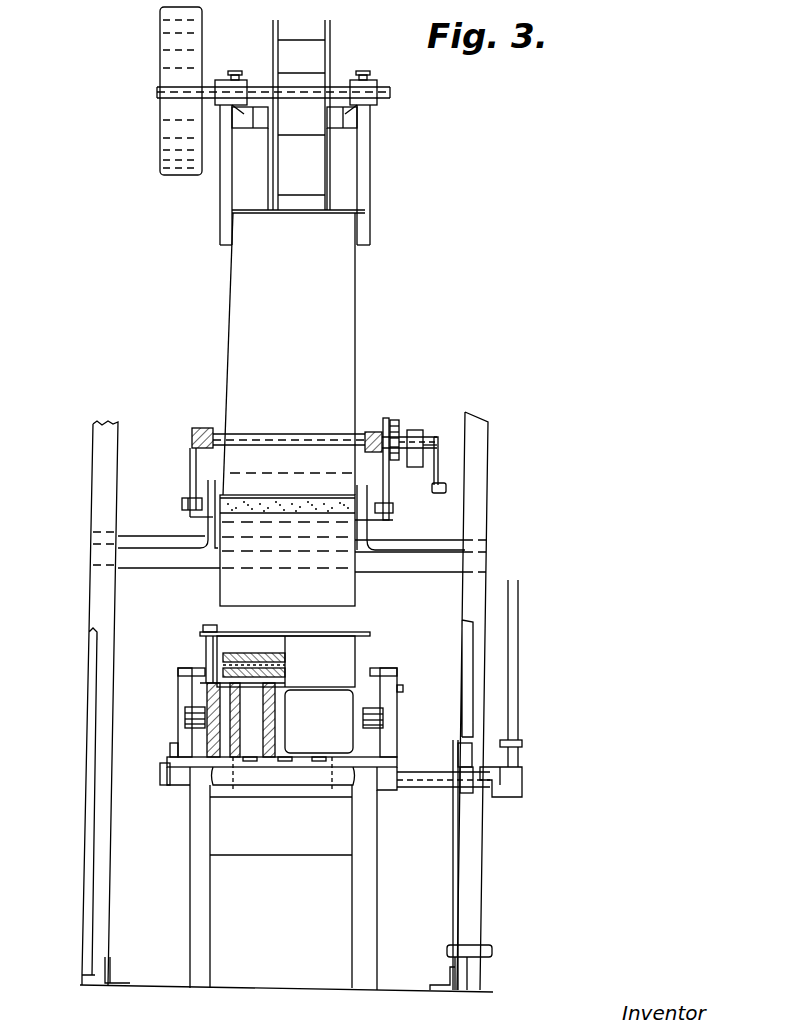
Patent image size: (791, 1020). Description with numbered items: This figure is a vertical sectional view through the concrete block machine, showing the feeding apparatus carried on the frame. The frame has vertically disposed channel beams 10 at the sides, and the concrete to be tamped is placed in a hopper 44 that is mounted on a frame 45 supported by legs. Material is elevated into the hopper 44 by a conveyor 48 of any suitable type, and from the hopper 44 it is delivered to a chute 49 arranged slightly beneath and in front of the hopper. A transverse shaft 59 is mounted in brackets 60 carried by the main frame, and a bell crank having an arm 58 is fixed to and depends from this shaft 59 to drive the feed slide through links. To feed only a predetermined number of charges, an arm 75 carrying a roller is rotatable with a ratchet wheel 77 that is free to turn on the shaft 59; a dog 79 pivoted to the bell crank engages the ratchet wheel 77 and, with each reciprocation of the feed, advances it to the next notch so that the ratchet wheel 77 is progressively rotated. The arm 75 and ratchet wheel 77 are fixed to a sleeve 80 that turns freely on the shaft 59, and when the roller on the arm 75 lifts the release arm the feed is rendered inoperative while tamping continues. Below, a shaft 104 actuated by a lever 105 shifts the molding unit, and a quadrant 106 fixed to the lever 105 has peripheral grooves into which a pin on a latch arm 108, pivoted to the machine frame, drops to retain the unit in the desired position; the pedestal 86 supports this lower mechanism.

The channel beam 10 is at (95, 598).
The hopper 44 is at (333, 347).
The frame 45 is at (437, 548).
The conveyor 48 is at (315, 67).
The chute 49 is at (333, 590).
The arm 58 is at (389, 490).
The transverse shaft 59 is at (280, 436).
The bracket 60 is at (204, 428).
The arm 75 is at (437, 470).
The ratchet wheel 77 is at (391, 458).
The dog 79 is at (415, 430).
The sleeve 80 is at (403, 430).
The pedestal 86 is at (200, 897).
The shaft 104 is at (440, 788).
The lever 105 is at (515, 660).
The quadrant 106 is at (470, 757).
The arm 108 is at (450, 908).